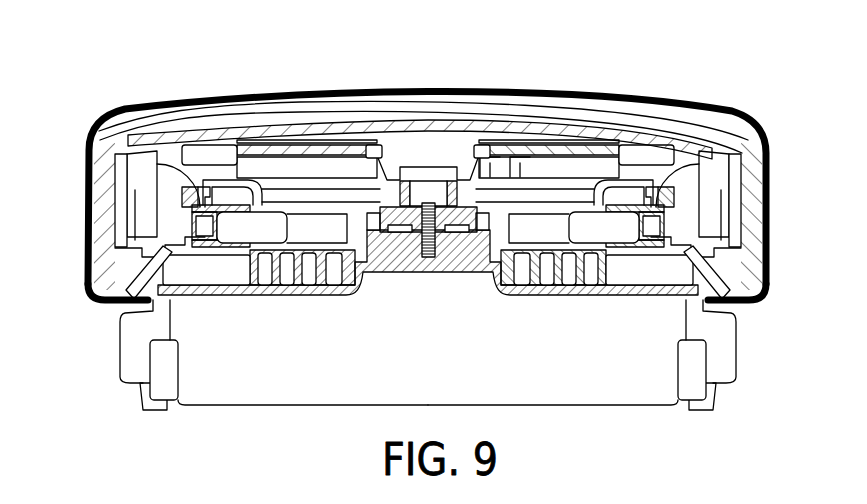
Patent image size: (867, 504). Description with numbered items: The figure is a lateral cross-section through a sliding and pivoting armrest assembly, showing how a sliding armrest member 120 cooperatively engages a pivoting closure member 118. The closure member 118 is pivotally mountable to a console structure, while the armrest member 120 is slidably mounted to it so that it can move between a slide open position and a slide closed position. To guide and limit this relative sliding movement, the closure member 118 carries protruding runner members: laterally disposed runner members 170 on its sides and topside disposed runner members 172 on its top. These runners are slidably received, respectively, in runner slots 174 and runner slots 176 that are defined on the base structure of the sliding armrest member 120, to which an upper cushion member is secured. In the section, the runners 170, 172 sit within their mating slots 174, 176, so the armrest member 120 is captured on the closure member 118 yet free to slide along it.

The pivoting closure member 118 is at (375, 274).
The sliding armrest member 120 is at (704, 97).
The laterally disposed runner members 170 is at (228, 256).
The topside disposed runner members 172 is at (432, 200).
The runner slots 174 is at (185, 228).
The runner slots 176 is at (476, 165).